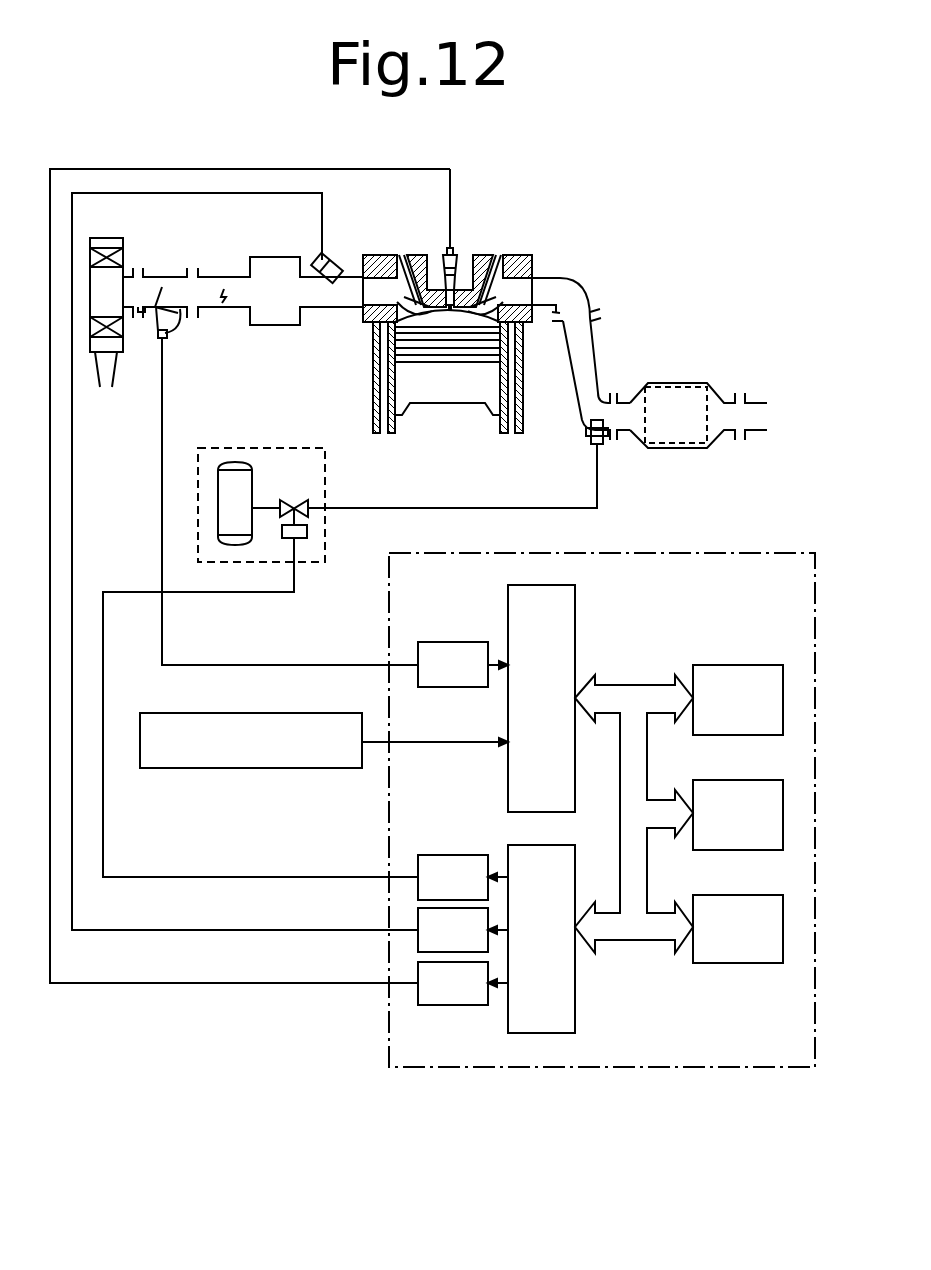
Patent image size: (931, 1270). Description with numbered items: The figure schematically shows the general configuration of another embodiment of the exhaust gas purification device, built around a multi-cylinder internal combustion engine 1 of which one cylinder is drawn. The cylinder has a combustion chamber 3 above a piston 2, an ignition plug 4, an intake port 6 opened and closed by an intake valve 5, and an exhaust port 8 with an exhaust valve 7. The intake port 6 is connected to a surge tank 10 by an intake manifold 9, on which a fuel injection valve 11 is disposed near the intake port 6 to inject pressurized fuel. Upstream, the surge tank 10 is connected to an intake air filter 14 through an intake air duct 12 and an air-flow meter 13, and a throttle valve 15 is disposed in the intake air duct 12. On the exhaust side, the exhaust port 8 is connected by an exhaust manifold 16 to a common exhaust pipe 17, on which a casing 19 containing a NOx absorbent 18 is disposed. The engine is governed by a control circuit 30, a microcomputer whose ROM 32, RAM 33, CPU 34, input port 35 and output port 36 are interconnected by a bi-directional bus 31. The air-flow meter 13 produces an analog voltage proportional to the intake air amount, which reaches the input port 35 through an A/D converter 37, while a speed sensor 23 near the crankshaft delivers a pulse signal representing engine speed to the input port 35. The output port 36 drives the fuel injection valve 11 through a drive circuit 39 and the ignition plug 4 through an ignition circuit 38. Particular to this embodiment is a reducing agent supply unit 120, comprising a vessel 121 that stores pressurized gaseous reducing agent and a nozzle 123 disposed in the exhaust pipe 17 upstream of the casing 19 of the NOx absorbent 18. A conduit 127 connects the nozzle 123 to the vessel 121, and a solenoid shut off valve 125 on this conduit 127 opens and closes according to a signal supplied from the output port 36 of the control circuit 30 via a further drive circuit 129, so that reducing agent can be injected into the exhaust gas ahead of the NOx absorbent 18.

The internal combustion engine 1 is at (534, 408).
The piston 2 is at (468, 387).
The combustion chamber 3 is at (443, 318).
The ignition plug 4 is at (452, 268).
The intake valve 5 is at (413, 275).
The intake port 6 is at (380, 290).
The exhaust valve 7 is at (500, 262).
The exhaust port 8 is at (538, 298).
The intake manifold 9 is at (328, 307).
The surge tank 10 is at (272, 325).
The fuel injection valve 11 is at (332, 260).
The intake air duct 12 is at (220, 277).
The air-flow meter 13 is at (168, 277).
The intake air filter 14 is at (100, 240).
The throttle valve 15 is at (224, 303).
The exhaust manifold 16 is at (583, 287).
The exhaust pipe 17 is at (590, 353).
The NOx absorbent 18 is at (680, 387).
The casing 19 is at (680, 448).
The speed sensor 23 is at (195, 713).
The control circuit 30 is at (820, 605).
The bi-directional bus 31 is at (630, 685).
The ROM 32 is at (742, 665).
The RAM 33 is at (733, 780).
The CPU 34 is at (728, 895).
The input port 35 is at (577, 612).
The output port 36 is at (577, 1000).
The A/D converter 37 is at (450, 642).
The ignition circuit 38 is at (437, 1005).
The drive circuit 39 is at (418, 936).
The reducing agent supply unit 120 is at (198, 480).
The vessel 121 is at (237, 462).
The nozzle 123 is at (600, 445).
The solenoid shut off valve 125 is at (310, 520).
The conduit 127 is at (437, 508).
The drive circuit 129 is at (452, 855).